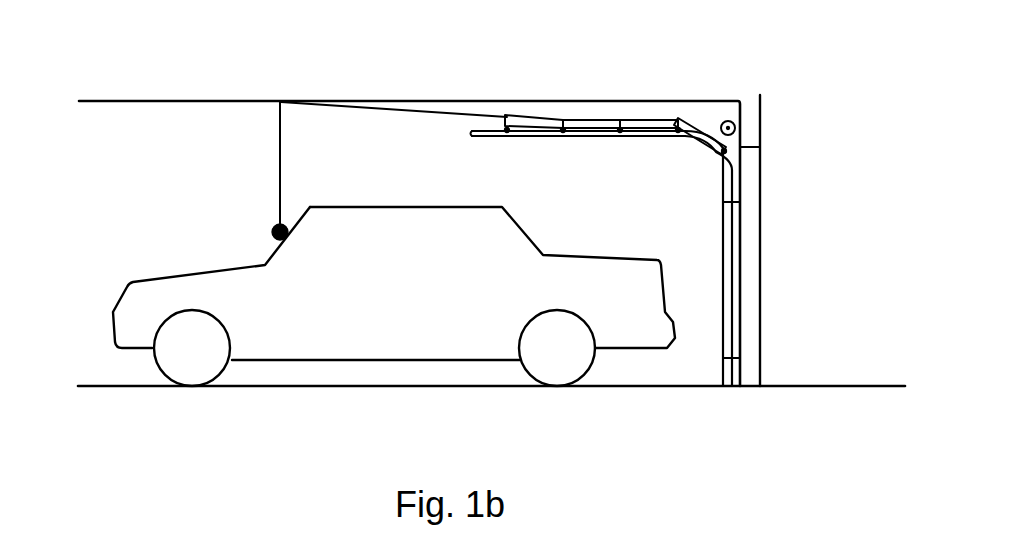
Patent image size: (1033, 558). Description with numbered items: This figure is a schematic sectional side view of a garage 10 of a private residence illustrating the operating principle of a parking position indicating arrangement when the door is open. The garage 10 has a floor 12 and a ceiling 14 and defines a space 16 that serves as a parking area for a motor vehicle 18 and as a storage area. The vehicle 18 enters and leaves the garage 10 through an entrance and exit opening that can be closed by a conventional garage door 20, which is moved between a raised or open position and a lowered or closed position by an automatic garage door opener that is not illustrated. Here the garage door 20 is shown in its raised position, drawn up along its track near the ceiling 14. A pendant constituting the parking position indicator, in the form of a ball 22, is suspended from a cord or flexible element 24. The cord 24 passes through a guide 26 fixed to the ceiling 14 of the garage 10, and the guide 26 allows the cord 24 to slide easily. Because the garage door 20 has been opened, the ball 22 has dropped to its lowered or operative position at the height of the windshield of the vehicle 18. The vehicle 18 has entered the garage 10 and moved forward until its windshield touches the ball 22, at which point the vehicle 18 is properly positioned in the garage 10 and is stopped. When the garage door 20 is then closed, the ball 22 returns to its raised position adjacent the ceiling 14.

The garage 10 is at (779, 59).
The floor 12 is at (90, 386).
The ceiling 14 is at (136, 103).
The space 16 is at (492, 183).
The motor vehicle 18 is at (188, 252).
The garage door 20 is at (600, 138).
The ball 22 is at (271, 229).
The cord 24 is at (362, 110).
The guide 26 is at (277, 105).